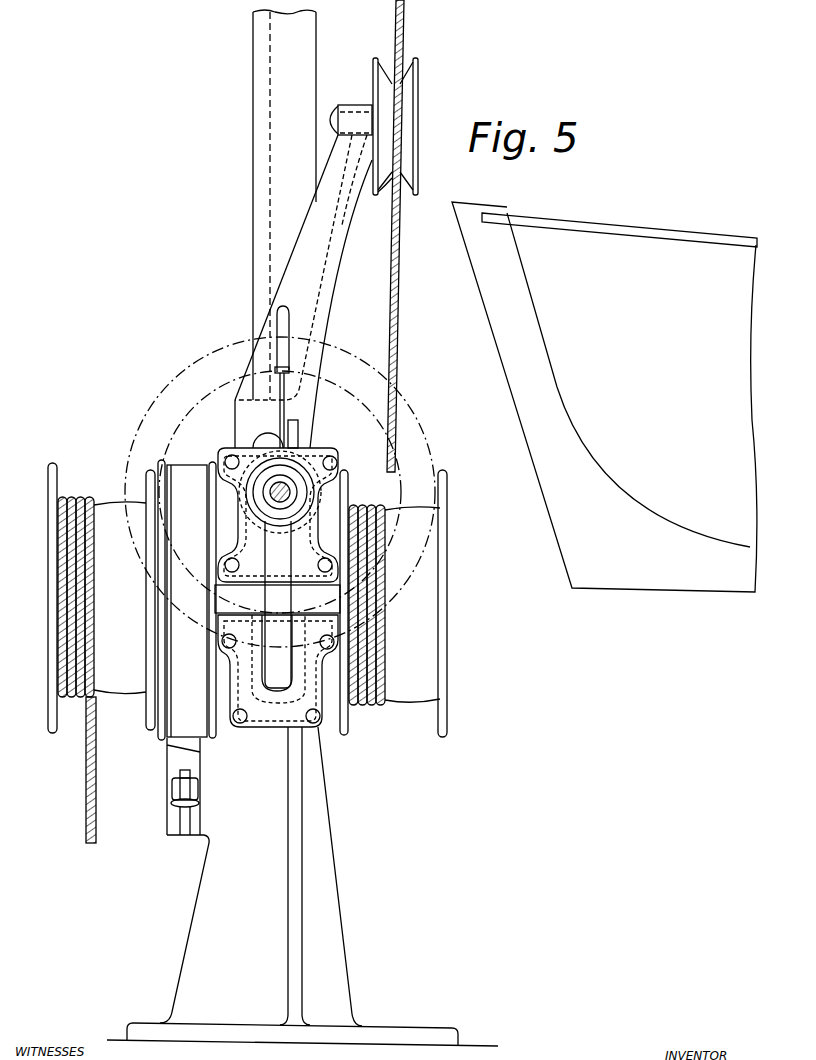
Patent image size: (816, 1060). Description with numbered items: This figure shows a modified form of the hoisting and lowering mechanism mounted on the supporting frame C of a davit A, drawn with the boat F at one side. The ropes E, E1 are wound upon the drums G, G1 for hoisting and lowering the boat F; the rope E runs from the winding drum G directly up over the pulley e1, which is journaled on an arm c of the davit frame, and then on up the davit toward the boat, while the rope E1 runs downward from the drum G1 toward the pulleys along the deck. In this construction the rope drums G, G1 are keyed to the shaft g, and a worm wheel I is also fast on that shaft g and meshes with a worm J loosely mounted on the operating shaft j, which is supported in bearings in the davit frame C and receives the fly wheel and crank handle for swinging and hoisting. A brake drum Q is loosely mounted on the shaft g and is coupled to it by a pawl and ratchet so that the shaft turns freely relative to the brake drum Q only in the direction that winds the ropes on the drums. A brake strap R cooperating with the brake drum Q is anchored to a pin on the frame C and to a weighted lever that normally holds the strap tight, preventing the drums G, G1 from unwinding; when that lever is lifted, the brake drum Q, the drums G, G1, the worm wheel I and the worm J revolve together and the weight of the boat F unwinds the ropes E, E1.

The davit A is at (258, 205).
The pulley e1 is at (414, 101).
The rope E is at (400, 358).
The arm c is at (268, 293).
The worm J is at (323, 470).
The operating shaft j is at (288, 490).
The worm wheel I is at (274, 702).
The winding drum G is at (444, 670).
The winding drum G1 is at (53, 735).
The shaft g is at (348, 705).
The rope E1 is at (85, 826).
The brake drum Q is at (167, 742).
The brake strap R is at (165, 765).
The supporting frame C is at (300, 930).
The boat F is at (604, 397).